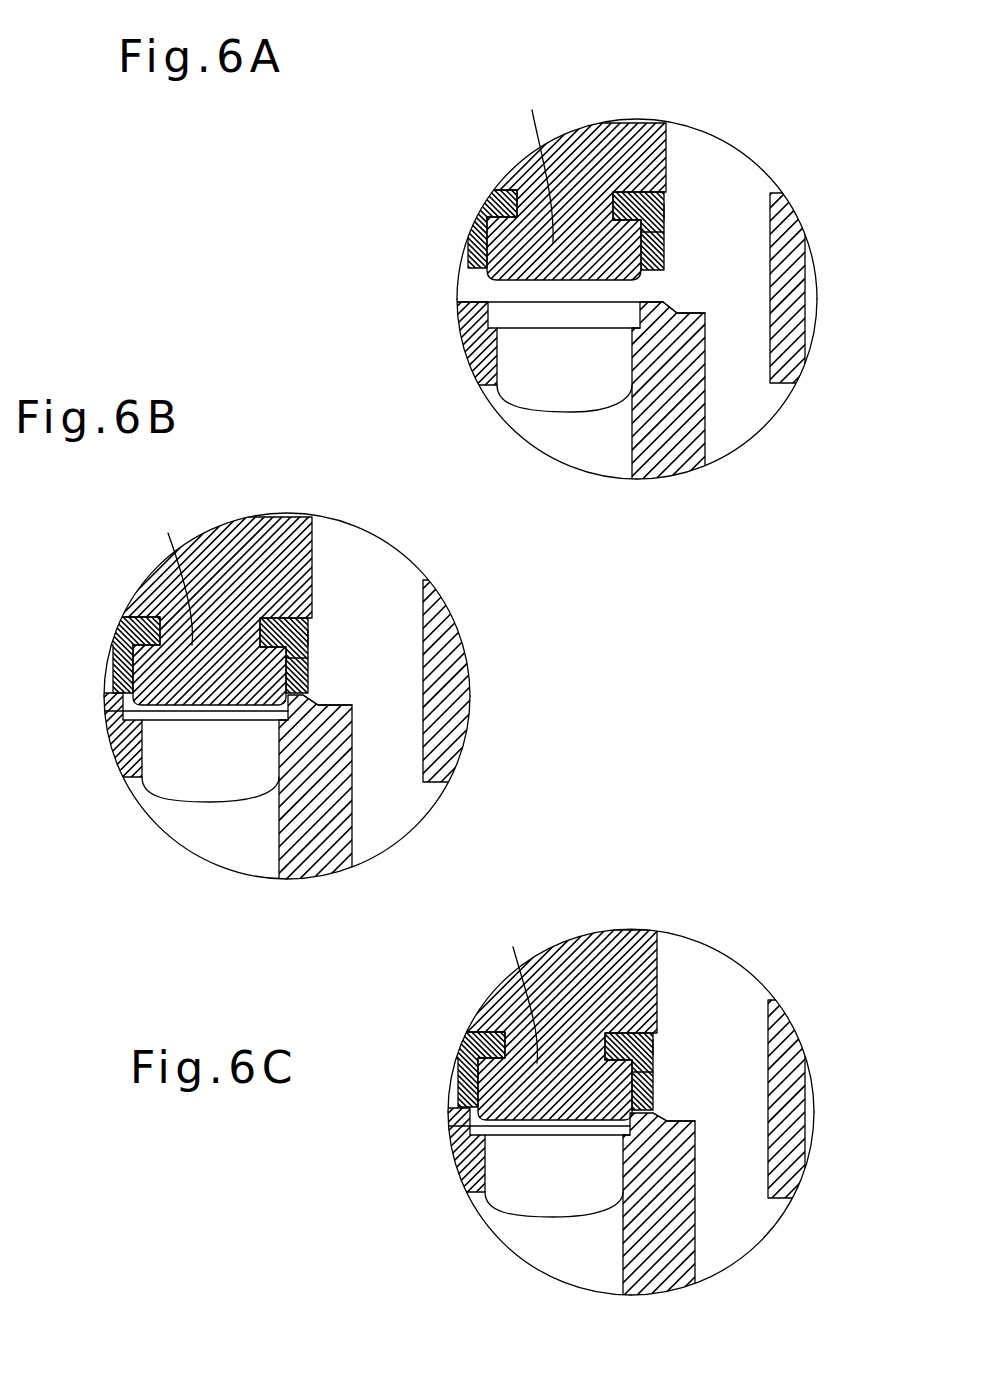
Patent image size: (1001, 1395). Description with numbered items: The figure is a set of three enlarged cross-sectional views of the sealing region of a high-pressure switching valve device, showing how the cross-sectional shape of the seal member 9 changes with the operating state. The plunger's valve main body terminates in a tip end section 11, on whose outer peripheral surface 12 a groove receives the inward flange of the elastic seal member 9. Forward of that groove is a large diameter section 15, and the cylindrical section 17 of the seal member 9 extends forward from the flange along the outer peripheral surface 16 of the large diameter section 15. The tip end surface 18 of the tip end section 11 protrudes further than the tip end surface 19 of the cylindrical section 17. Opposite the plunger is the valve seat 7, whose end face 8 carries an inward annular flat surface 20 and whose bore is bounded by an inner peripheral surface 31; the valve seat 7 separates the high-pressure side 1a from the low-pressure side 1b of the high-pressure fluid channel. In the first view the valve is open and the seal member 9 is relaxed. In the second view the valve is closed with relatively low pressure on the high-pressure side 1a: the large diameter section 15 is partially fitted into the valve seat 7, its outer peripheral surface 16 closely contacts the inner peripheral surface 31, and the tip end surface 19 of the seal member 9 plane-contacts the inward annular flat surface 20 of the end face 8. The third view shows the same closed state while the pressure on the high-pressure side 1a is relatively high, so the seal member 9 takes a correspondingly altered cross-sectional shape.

In FIG. 6A, the high-pressure side 1a is at (720, 440).
In FIG. 6B, the high-pressure side 1a is at (362, 840).
In FIG. 6C, the high-pressure side 1a is at (708, 1258).
In FIG. 6A, the low-pressure side 1b is at (552, 440).
In FIG. 6B, the low-pressure side 1b is at (218, 845).
In FIG. 6C, the low-pressure side 1b is at (562, 1262).
In FIG. 6A, the valve seat 7 is at (712, 345).
In FIG. 6B, the valve seat 7 is at (357, 745).
In FIG. 6C, the valve seat 7 is at (699, 1156).
In FIG. 6A, the valve seat end face 8 is at (697, 304).
In FIG. 6B, the valve seat end face 8 is at (339, 703).
In FIG. 6C, the valve seat end face 8 is at (680, 1118).
In FIG. 6A, the seal member 9 is at (665, 211).
In FIG. 6B, the seal member 9 is at (309, 637).
In FIG. 6C, the seal member 9 is at (652, 1047).
In FIG. 6A, the tip end section 11 is at (583, 223).
In FIG. 6B, the tip end section 11 is at (219, 645).
In FIG. 6C, the tip end section 11 is at (563, 1058).
In FIG. 6A, the outer peripheral surface 12 is at (467, 235).
In FIG. 6B, the outer peripheral surface 12 is at (110, 643).
In FIG. 6C, the outer peripheral surface 12 is at (462, 1075).
In FIG. 6A, the large diameter section 15 is at (529, 159).
In FIG. 6B, the large diameter section 15 is at (169, 572).
In FIG. 6C, the large diameter section 15 is at (514, 987).
In FIG. 6A, the outer peripheral surface 16 is at (664, 244).
In FIG. 6B, the outer peripheral surface 16 is at (309, 688).
In FIG. 6C, the outer peripheral surface 16 is at (654, 1100).
In FIG. 6A, the cylindrical section 17 is at (664, 268).
In FIG. 6B, the cylindrical section 17 is at (309, 664).
In FIG. 6C, the cylindrical section 17 is at (654, 1075).
In FIG. 6A, the tip end surface 18 is at (563, 300).
In FIG. 6B, the tip end surface 18 is at (205, 712).
In FIG. 6C, the tip end surface 18 is at (550, 1126).
In FIG. 6A, the tip end surface 19 is at (784, 228).
In FIG. 6B, the tip end surface 19 is at (115, 758).
In FIG. 6C, the tip end surface 19 is at (462, 1165).
In FIG. 6A, the inward annular flat surface 20 is at (478, 300).
In FIG. 6B, the inward annular flat surface 20 is at (110, 667).
In FIG. 6C, the inward annular flat surface 20 is at (462, 1066).
In FIG. 6A, the inner peripheral surface 31 is at (647, 312).
In FIG. 6B, the inner peripheral surface 31 is at (280, 707).
In FIG. 6C, the inner peripheral surface 31 is at (630, 1125).